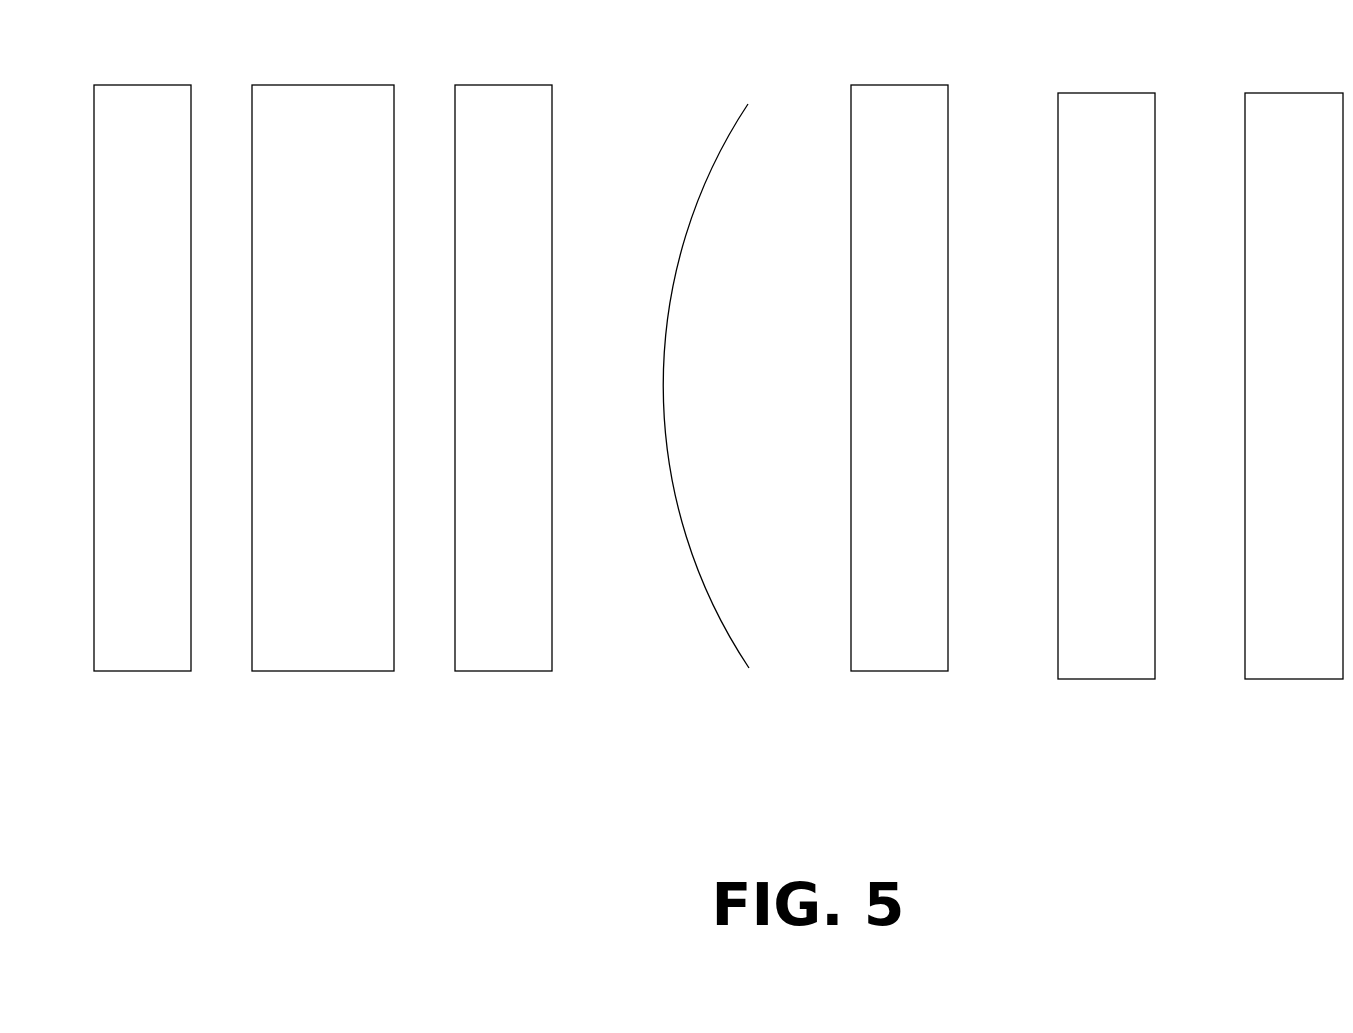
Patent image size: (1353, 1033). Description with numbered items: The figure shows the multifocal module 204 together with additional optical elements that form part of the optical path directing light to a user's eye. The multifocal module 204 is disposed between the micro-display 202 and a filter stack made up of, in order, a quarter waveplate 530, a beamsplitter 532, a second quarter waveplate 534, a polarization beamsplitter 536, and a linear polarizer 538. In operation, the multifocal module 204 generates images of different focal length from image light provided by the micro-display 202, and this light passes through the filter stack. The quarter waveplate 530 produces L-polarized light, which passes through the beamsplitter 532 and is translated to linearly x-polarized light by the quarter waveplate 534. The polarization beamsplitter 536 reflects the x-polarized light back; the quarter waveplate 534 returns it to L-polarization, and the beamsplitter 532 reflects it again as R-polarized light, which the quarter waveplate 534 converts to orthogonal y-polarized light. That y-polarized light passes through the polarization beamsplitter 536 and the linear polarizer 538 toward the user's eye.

The micro-display 202 is at (126, 402).
The multifocal module 204 is at (306, 416).
The quarter waveplate 530 is at (488, 402).
The beamsplitter 532 is at (747, 101).
The quarter waveplate 534 is at (884, 402).
The polarization beamsplitter 536 is at (1090, 410).
The linear polarizer 538 is at (1278, 410).